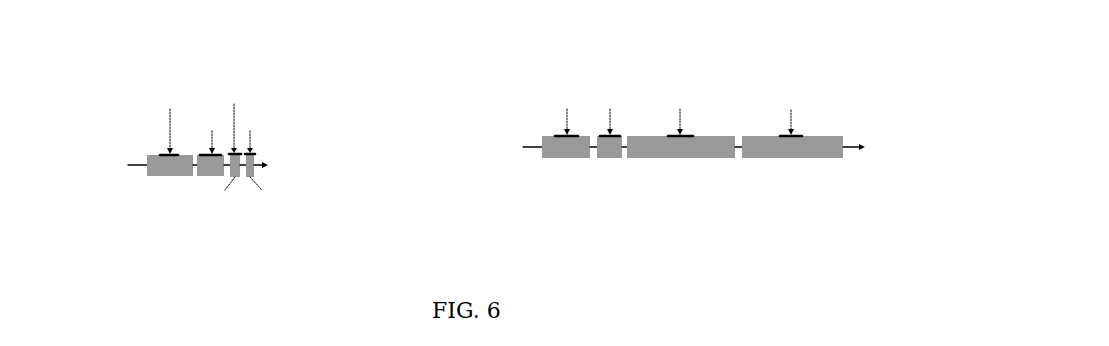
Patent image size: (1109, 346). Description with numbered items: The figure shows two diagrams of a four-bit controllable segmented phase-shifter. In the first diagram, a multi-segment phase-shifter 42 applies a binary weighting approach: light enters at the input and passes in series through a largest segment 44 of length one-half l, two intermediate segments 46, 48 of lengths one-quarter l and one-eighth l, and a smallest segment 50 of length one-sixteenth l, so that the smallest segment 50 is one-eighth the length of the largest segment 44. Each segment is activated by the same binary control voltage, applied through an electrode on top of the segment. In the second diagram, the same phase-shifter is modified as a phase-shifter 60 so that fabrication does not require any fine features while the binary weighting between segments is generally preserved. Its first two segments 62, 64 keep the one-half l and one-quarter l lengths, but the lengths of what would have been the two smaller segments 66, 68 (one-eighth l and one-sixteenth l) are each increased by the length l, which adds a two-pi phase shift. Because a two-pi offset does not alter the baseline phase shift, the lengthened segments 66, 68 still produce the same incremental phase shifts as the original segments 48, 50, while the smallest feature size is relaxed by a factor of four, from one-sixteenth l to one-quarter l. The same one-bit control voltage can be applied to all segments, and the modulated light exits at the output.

The multi-segment phase-shifter 42 is at (208, 139).
The largest segment 44 is at (146, 164).
The intermediate segment 46 is at (202, 162).
The intermediate segment 48 is at (238, 177).
The smallest segment 50 is at (256, 170).
The modified multi-segment phase-shifter 60 is at (695, 138).
The largest segment 62 is at (556, 139).
The intermediate segment 64 is at (621, 138).
The lengthened smaller segment 66 is at (704, 136).
The lengthened smallest segment 68 is at (795, 162).